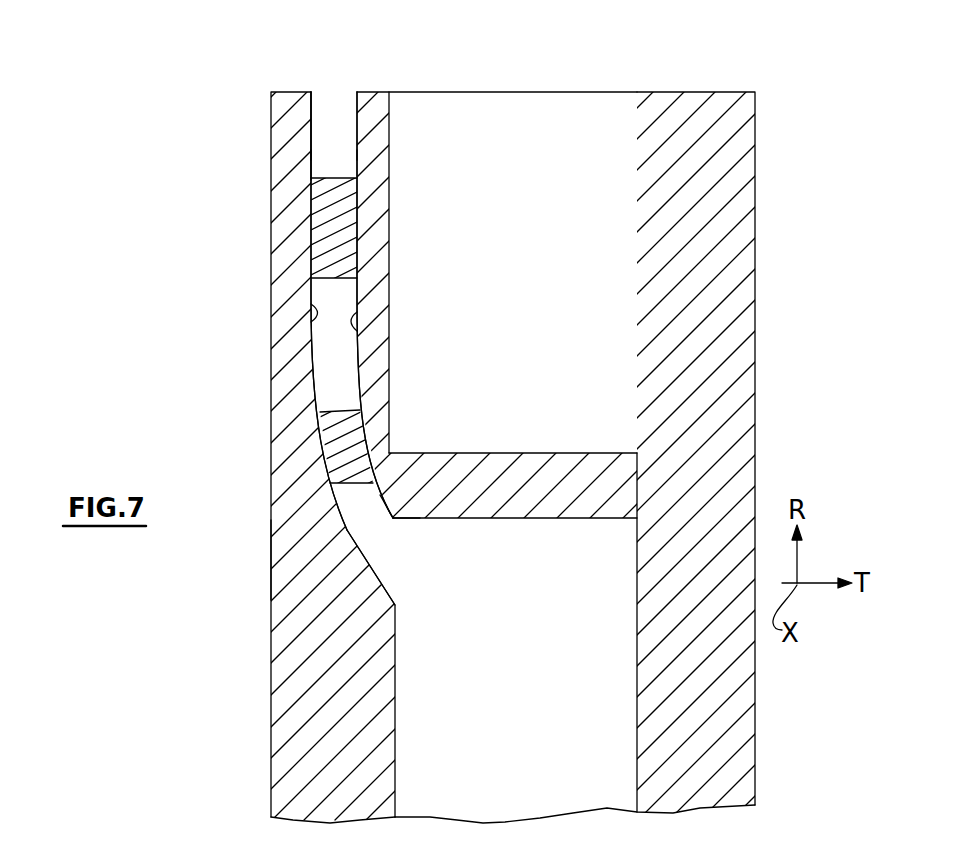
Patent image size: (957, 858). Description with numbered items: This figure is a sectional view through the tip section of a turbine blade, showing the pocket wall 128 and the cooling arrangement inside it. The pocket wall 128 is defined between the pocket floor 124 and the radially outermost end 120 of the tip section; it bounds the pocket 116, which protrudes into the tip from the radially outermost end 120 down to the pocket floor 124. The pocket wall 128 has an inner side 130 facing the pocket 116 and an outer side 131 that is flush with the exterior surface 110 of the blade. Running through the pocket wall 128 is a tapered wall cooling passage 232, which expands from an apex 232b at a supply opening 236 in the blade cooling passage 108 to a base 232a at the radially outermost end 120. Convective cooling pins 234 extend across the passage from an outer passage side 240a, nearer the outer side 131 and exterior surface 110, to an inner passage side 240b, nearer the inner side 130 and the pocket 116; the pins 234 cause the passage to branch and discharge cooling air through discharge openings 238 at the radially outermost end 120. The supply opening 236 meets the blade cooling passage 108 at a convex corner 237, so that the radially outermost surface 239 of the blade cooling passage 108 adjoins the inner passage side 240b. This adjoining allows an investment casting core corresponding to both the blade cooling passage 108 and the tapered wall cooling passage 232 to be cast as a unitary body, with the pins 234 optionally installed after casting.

The blade cooling passage 108 is at (527, 732).
The exterior surface 110 is at (271, 673).
The pocket 116 is at (534, 251).
The radially outermost end 120 is at (507, 92).
The pocket floor 124 is at (501, 402).
The pocket wall 128 is at (707, 266).
The inner side 130 is at (390, 190).
The outer side 131 is at (271, 550).
The tapered wall cooling passage 232 is at (333, 356).
The base 232a is at (349, 78).
The apex 232b is at (407, 585).
The convective cooling pins 234 is at (330, 245).
The supply opening 236 is at (390, 548).
The convex corner 237 is at (393, 522).
The discharge openings 238 is at (327, 103).
The radially outermost surface 239 is at (558, 518).
The outer passage side 240a is at (315, 310).
The inner passage side 240b is at (357, 312).